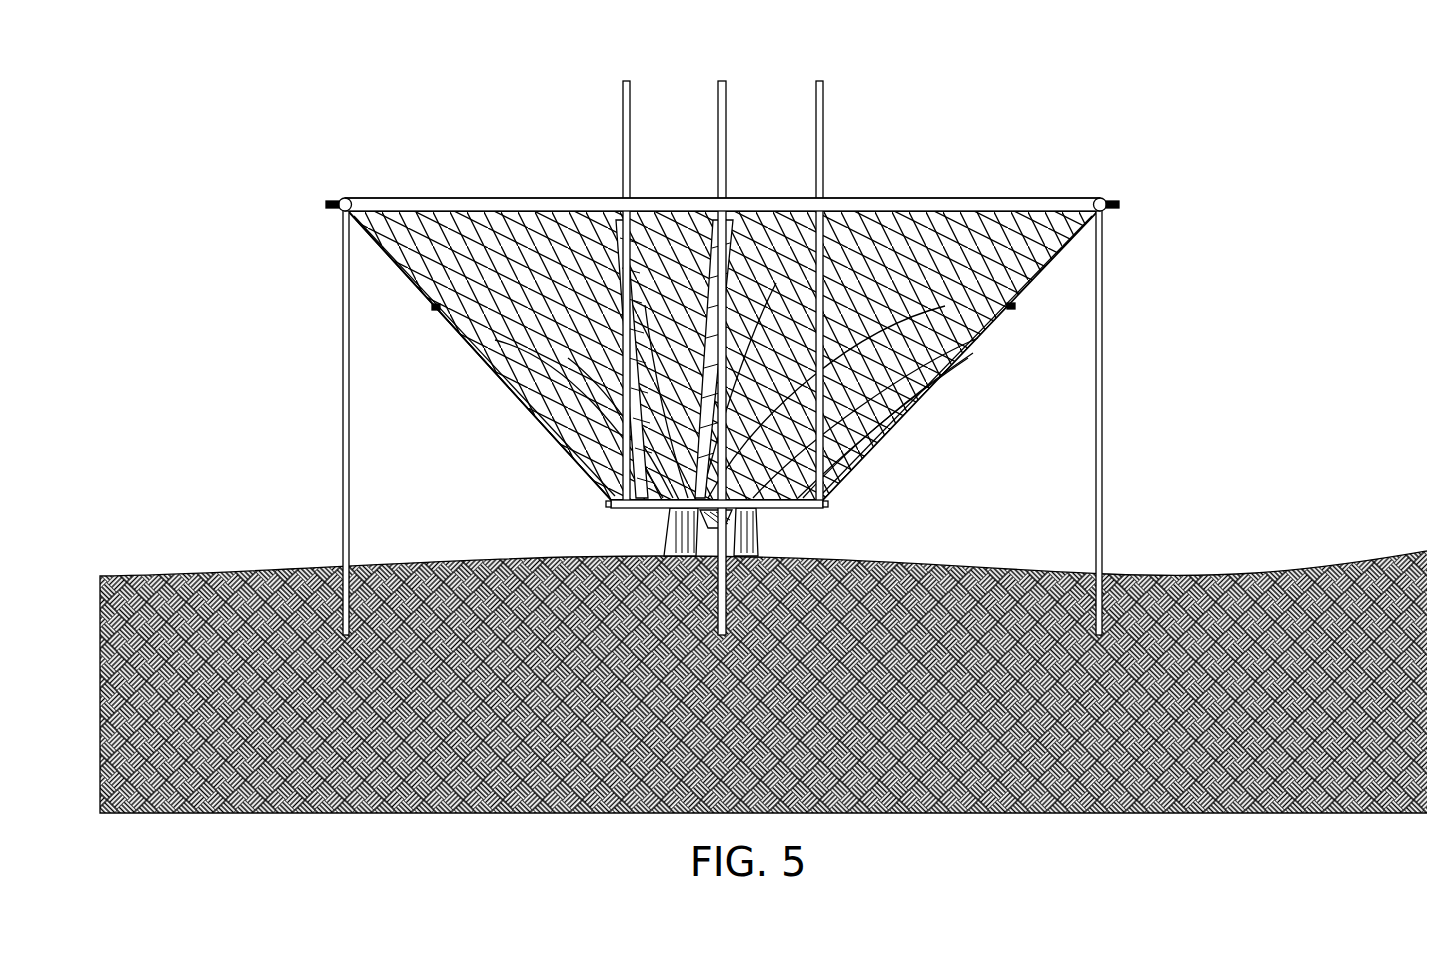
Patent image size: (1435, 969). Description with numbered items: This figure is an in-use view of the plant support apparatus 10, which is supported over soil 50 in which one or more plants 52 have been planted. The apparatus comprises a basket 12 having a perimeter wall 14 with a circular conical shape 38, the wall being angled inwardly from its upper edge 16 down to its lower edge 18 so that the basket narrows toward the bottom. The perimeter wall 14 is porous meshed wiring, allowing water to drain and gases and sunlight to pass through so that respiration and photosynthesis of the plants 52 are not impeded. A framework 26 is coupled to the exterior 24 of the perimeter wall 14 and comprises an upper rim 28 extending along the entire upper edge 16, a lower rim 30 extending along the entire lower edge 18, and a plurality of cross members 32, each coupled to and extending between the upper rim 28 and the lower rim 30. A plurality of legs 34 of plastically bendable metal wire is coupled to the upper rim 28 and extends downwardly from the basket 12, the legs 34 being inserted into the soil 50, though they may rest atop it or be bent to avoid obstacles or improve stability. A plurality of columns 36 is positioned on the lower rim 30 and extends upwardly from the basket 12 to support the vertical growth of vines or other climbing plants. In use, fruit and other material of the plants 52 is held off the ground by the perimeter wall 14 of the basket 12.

The plant support apparatus 10 is at (1262, 140).
The basket 12 is at (694, 329).
The perimeter wall 14 is at (968, 220).
The upper edge 16 is at (883, 203).
The lower edge 18 is at (592, 467).
The exterior 24 is at (405, 240).
The framework 26 is at (1200, 198).
The upper rim 28 is at (1048, 192).
The lower rim 30 is at (640, 505).
The cross member 32 is at (458, 338).
The leg 34 is at (335, 390).
The column 36 is at (622, 106).
The circular conical shape 38 is at (386, 185).
The soil 50 is at (1268, 565).
The plant 52 is at (750, 520).